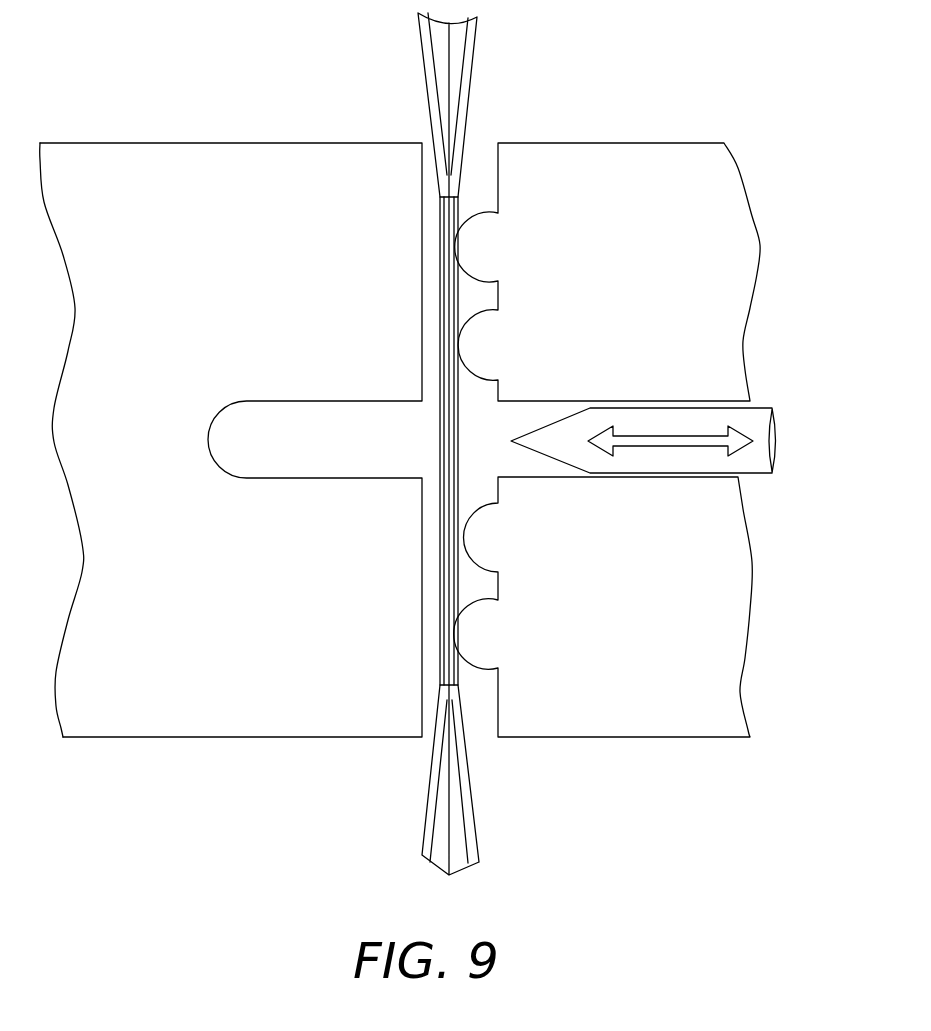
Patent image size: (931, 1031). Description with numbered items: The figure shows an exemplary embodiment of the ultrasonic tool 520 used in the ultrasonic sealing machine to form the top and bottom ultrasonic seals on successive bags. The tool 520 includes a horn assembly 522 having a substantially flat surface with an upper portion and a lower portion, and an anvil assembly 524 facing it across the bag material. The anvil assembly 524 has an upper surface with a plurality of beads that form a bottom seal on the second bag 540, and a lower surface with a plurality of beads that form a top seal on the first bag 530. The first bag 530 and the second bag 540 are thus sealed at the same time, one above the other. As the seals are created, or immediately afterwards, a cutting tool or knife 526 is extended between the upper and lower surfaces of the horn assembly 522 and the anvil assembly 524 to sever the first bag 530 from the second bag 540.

The ultrasonic tool 520 is at (384, 92).
The horn assembly 522 is at (255, 163).
The anvil assembly 524 is at (618, 155).
The cutting tool or knife 526 is at (757, 413).
The first bag 530 is at (433, 763).
The second bag 540 is at (475, 55).